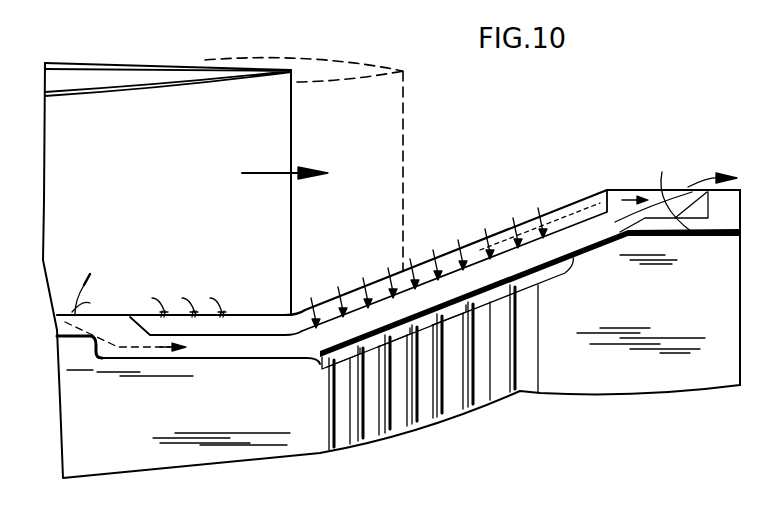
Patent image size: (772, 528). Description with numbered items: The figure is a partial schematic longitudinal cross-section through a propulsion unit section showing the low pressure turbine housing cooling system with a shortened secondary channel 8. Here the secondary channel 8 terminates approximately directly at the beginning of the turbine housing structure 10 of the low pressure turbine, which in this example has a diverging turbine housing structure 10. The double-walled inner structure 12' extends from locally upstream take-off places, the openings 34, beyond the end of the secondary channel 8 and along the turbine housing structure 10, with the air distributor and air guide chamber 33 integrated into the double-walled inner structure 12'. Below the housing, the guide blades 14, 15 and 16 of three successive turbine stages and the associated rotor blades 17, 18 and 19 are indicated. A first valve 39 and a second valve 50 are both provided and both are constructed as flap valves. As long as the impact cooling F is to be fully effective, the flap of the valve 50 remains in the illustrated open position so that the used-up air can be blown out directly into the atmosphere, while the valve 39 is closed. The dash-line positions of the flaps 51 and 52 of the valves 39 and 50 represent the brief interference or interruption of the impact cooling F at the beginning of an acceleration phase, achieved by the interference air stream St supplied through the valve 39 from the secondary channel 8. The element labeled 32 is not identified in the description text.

The secondary channel 8 is at (157, 207).
The turbine housing structure 10 is at (550, 238).
The double-walled inner structure 12' is at (398, 252).
The guide blade 14 is at (343, 436).
The guide blade 15 is at (394, 416).
The guide blade 16 is at (445, 391).
The rotor blade 17 is at (367, 426).
The rotor blade 18 is at (420, 411).
The rotor blade 19 is at (473, 380).
The channel bottom 32 is at (274, 359).
The air distributor and air guide chamber 33 is at (275, 333).
The openings 34 is at (197, 312).
The first valve 39 is at (88, 280).
The second valve 50 is at (685, 168).
The flap 51 is at (695, 236).
The flap 52 is at (80, 351).
The impact cooling F is at (362, 290).
The interference air stream St is at (134, 406).